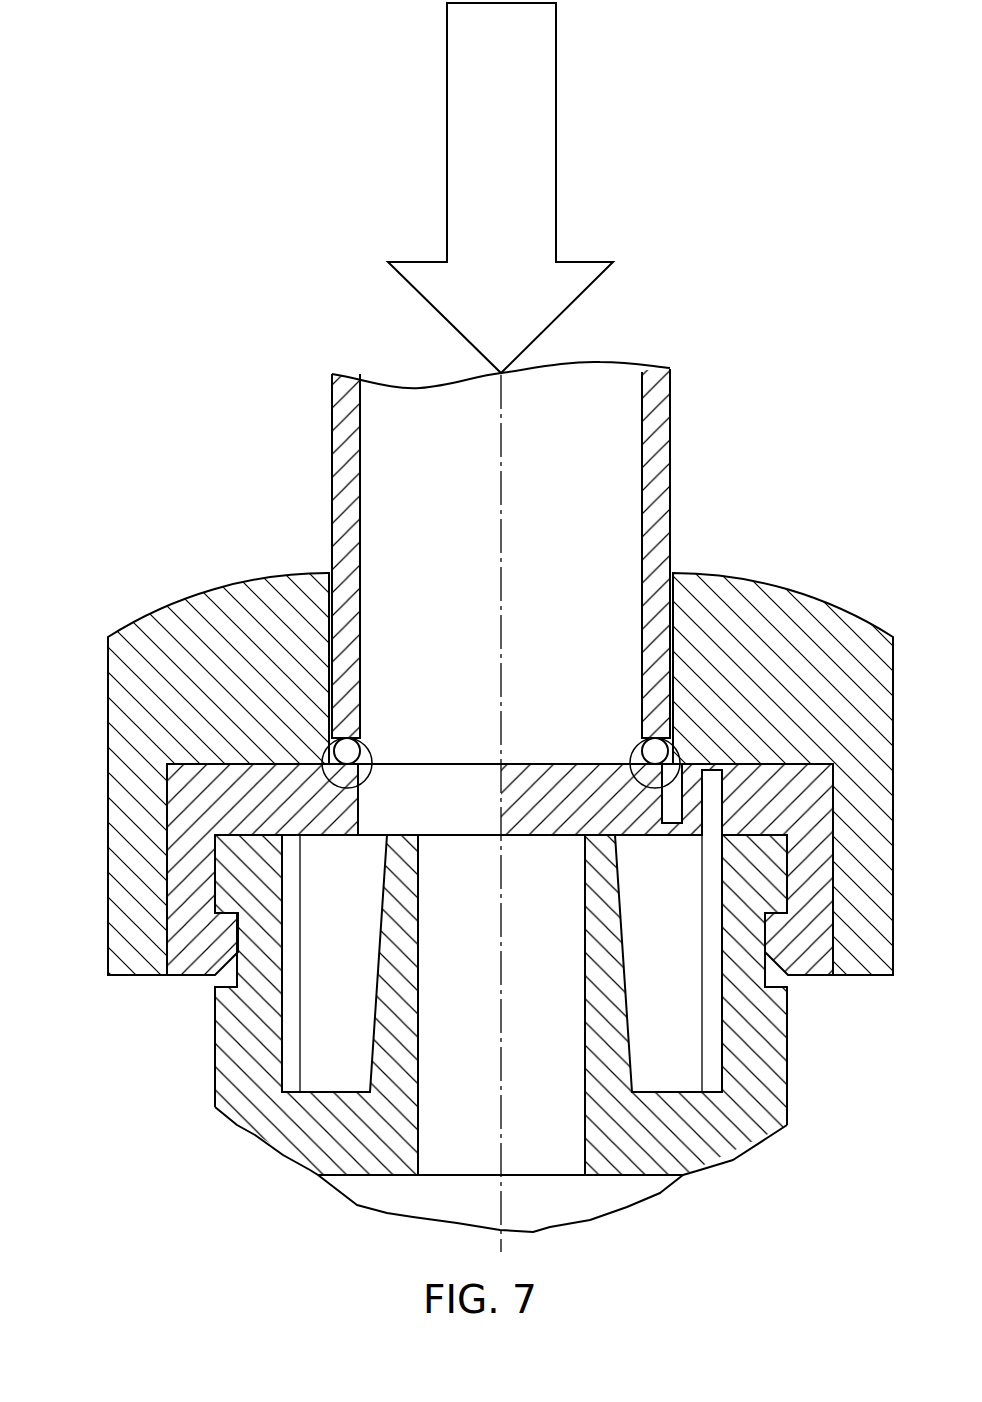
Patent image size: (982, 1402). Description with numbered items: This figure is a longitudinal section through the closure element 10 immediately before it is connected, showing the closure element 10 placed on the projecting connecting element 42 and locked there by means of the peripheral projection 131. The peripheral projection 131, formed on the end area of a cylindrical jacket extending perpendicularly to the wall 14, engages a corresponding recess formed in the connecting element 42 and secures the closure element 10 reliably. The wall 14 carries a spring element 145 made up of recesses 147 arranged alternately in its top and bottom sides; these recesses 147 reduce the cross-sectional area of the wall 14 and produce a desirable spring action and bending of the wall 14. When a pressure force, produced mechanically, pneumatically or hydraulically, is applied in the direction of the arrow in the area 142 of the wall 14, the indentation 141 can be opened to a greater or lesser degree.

The closure element 10 is at (815, 965).
The wall 14 is at (571, 790).
The indentation 141 is at (506, 762).
The area 142 is at (366, 748).
The spring element 145 is at (672, 758).
The recesses 147 is at (710, 824).
The connecting element 42 is at (272, 977).
The peripheral projection 131 is at (226, 925).